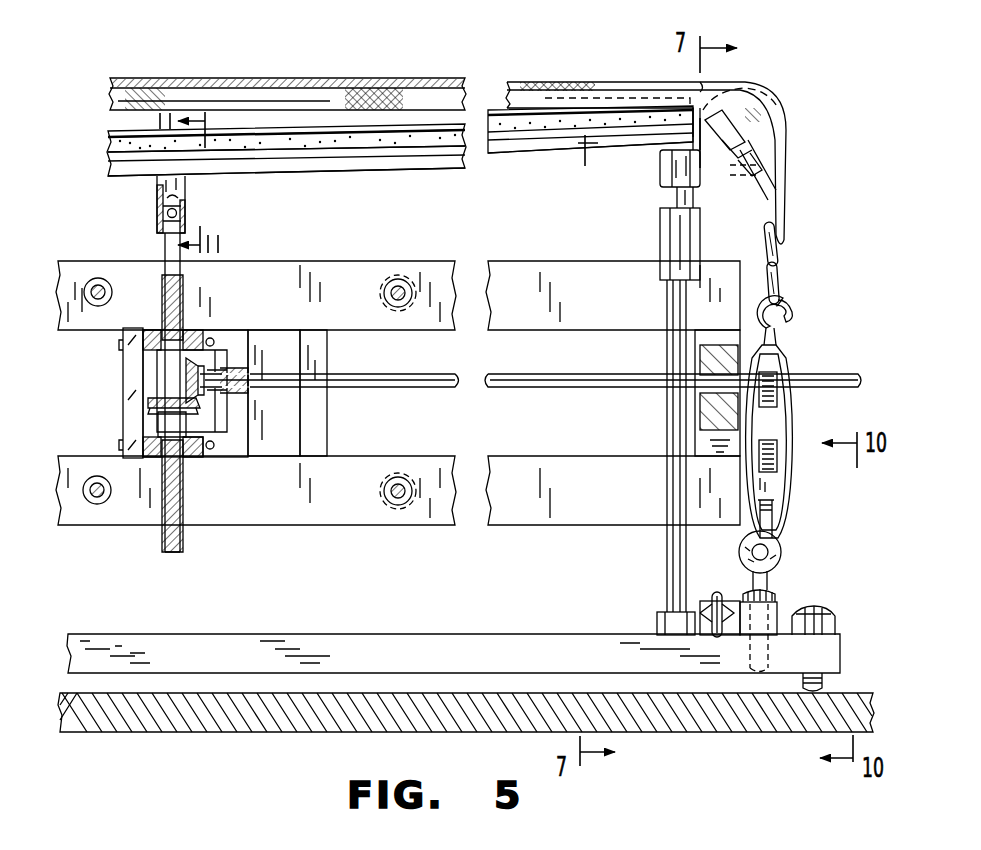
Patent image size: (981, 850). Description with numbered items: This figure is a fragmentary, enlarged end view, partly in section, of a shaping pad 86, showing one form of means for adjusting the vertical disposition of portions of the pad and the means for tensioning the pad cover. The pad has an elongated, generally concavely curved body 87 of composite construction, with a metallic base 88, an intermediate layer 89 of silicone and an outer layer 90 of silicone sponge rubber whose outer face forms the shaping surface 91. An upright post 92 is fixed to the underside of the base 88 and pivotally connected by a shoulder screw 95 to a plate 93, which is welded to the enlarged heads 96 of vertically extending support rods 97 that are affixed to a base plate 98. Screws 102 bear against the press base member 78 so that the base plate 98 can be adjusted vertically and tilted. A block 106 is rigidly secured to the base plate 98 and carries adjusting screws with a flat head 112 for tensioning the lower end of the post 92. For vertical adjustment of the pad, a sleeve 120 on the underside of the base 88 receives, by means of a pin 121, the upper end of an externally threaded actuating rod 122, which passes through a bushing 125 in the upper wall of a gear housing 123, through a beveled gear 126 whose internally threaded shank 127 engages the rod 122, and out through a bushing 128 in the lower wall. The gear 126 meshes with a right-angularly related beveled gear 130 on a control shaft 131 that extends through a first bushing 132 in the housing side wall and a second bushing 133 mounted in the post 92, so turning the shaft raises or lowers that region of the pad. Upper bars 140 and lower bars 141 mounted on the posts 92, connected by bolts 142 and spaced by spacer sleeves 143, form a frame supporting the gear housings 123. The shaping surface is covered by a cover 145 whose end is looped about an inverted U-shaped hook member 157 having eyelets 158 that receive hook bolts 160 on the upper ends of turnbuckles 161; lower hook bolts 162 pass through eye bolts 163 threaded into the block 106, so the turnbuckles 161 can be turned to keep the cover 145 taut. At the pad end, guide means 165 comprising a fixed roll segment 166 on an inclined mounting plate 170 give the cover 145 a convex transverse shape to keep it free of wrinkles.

The press base member 78 is at (163, 732).
The shaping pad 86 is at (540, 156).
The body 87 is at (325, 174).
The metallic base 88 is at (413, 168).
The intermediate layer 89 is at (510, 138).
The outer layer 90 is at (345, 148).
The shaping surface 91 is at (118, 132).
The upright post 92 is at (715, 351).
The plate 93 is at (680, 200).
The shoulder screw 95 is at (660, 167).
The enlarged heads 96 is at (672, 240).
The support rods 97 is at (668, 475).
The base plate 98 is at (158, 635).
The screws 102 is at (820, 686).
The block 106 is at (768, 614).
The flat head 112 is at (712, 638).
The sleeve 120 is at (158, 187).
The pin 121 is at (180, 212).
The actuating rod 122 is at (172, 240).
The gear housing 123 is at (235, 330).
The bushing 125 is at (195, 330).
The beveled gear 126 is at (152, 400).
The shank 127 is at (162, 420).
The bushing 128 is at (190, 452).
The beveled gear 130 is at (200, 402).
The control shaft 131 is at (397, 388).
The first bushing 132 is at (248, 372).
The second bushing 133 is at (710, 400).
The upper bars 140 is at (522, 318).
The lower bars 141 is at (320, 527).
The bolts 142 is at (108, 297).
The spacer sleeves 143 is at (82, 282).
The cover 145 is at (222, 78).
The hook member 157 is at (784, 252).
The eyelets 158 is at (784, 294).
The hook bolts 160 is at (782, 332).
The turnbuckles 161 is at (795, 427).
The hook bolts 162 is at (772, 522).
The eye bolts 163 is at (781, 556).
The guide means 165 is at (766, 94).
The roll segment 166 is at (748, 150).
The mounting plate 170 is at (756, 172).